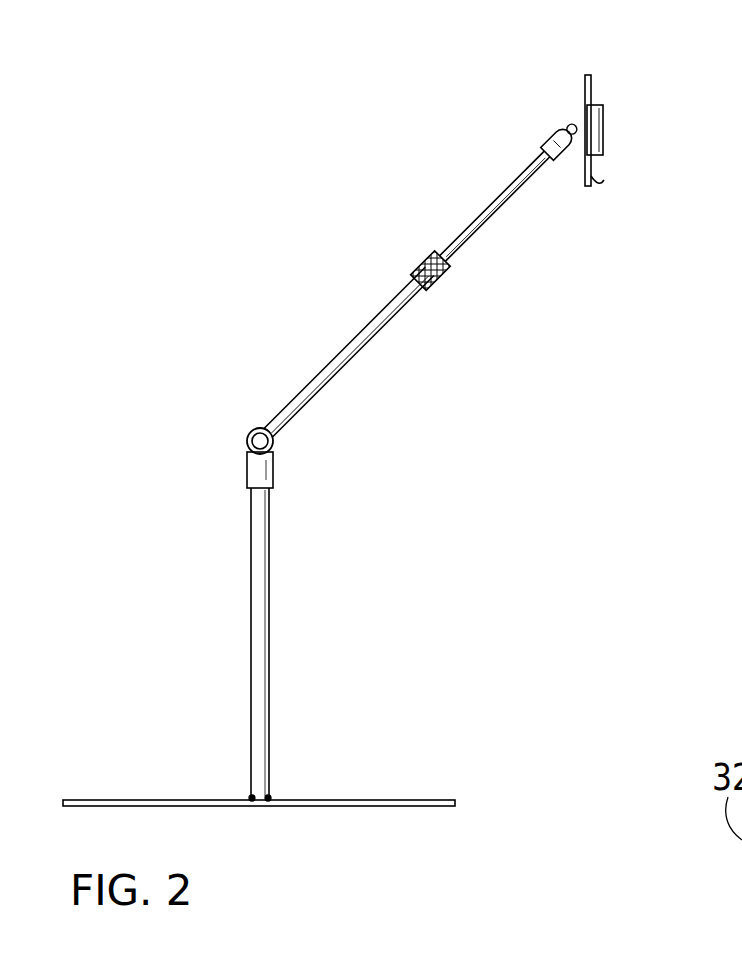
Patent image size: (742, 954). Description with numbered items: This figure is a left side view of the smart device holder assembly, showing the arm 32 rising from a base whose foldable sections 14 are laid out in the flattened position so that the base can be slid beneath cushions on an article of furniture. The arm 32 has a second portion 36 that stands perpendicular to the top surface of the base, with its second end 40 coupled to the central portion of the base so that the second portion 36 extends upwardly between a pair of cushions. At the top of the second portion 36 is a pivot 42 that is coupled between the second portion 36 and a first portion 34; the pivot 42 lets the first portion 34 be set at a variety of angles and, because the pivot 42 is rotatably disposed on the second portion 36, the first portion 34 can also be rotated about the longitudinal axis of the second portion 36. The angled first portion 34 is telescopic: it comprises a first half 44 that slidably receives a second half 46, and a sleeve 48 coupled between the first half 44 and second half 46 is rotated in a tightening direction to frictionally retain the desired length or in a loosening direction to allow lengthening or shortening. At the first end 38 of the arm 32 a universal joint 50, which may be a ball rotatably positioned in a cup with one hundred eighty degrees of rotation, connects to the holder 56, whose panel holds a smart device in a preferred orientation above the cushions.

The foldable sections 14 is at (145, 800).
The arm 32 is at (290, 392).
The first portion 34 is at (360, 332).
The second portion 36 is at (254, 582).
The first end 38 is at (548, 128).
The second end 40 is at (262, 808).
The pivot 42 is at (250, 438).
The first half 44 is at (355, 368).
The second half 46 is at (503, 222).
The sleeve 48 is at (425, 262).
The universal joint 50 is at (562, 157).
The holder 56 is at (613, 93).